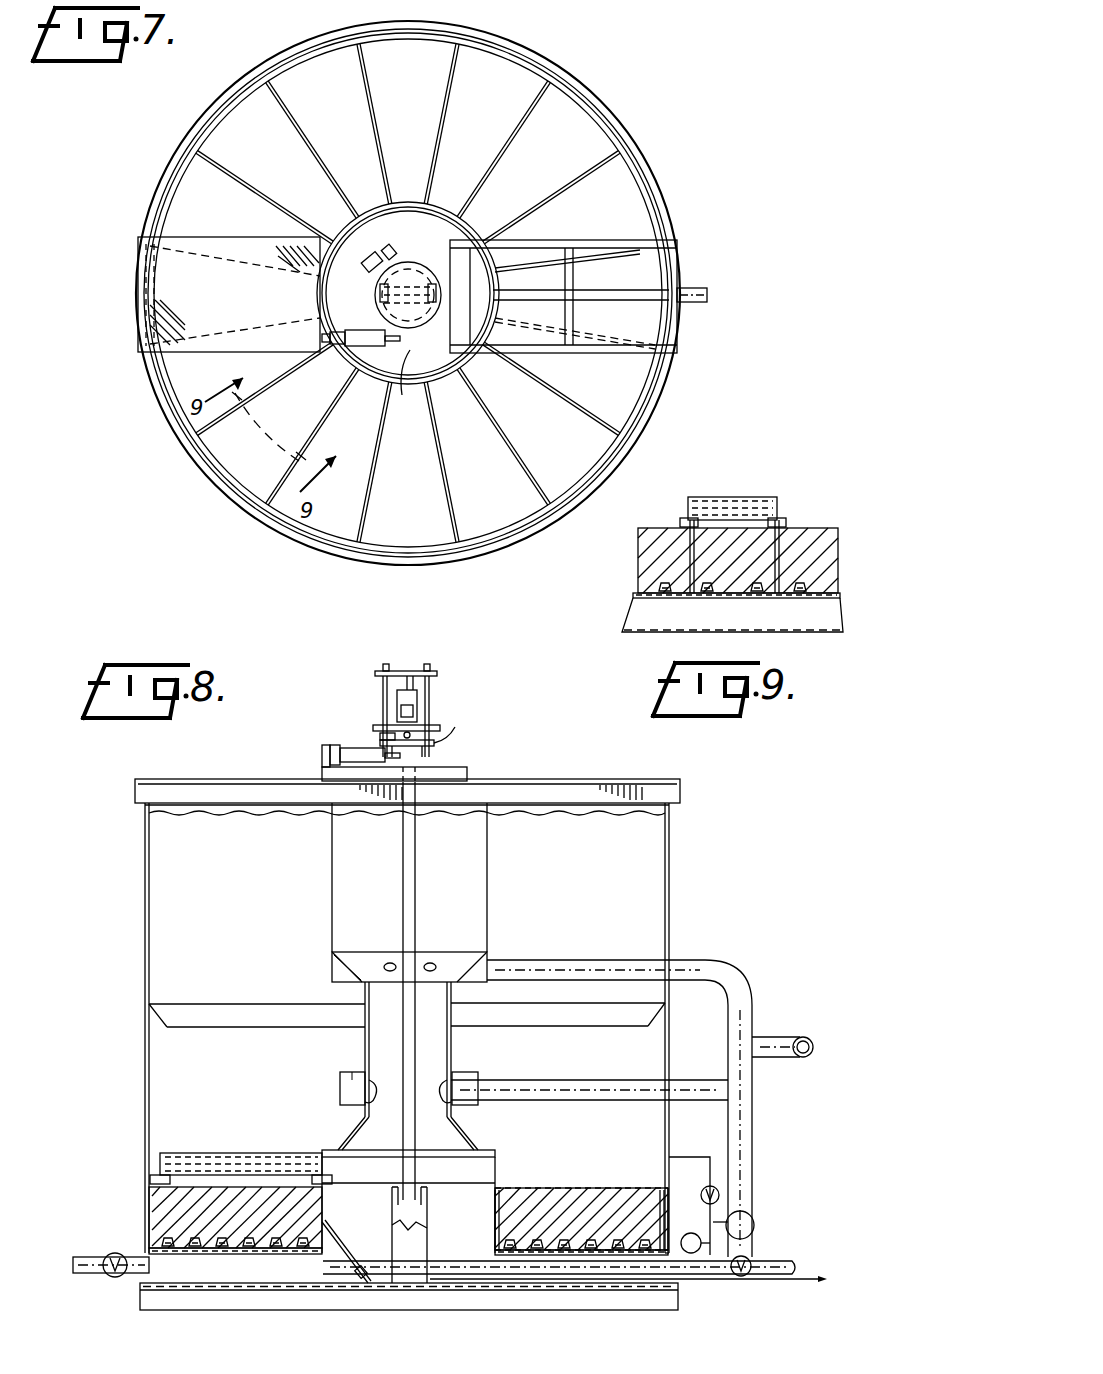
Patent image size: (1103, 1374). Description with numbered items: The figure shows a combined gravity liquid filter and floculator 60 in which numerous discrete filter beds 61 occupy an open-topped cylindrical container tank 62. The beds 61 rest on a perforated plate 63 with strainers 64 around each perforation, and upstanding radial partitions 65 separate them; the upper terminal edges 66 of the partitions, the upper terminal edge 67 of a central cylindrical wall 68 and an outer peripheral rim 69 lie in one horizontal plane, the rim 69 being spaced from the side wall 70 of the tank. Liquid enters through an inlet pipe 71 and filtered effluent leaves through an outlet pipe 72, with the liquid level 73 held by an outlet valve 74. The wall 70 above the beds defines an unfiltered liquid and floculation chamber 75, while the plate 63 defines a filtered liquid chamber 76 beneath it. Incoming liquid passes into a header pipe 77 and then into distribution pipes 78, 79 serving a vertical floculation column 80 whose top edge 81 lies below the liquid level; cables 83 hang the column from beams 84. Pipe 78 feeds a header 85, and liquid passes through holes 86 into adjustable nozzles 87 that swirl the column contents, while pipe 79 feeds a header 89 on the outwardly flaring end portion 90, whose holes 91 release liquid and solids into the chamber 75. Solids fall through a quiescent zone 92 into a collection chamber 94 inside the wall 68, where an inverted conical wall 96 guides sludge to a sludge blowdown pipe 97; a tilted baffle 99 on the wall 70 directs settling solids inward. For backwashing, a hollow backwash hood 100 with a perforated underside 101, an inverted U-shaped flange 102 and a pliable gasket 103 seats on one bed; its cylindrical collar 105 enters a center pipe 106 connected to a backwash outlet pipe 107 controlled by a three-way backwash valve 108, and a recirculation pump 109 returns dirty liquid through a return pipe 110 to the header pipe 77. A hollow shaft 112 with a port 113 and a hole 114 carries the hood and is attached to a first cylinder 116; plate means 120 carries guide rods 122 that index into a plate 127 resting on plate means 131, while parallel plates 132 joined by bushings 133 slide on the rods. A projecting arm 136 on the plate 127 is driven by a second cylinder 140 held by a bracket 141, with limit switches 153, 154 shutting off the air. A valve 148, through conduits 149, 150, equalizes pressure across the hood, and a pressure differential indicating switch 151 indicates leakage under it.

In FIG. 7, the combined gravity liquid filter and floculator 60 is at (660, 135).
In FIG. 8, the combined gravity liquid filter and floculator 60 is at (695, 918).
In FIG. 7, the filter beds 61 is at (398, 449).
In FIG. 9, the filter beds 61 is at (640, 562).
In FIG. 8, the filter beds 61 is at (150, 1213).
In FIG. 8, the container tank 62 is at (137, 925).
In FIG. 9, the perforated plate 63 is at (643, 603).
In FIG. 8, the perforated plate 63 is at (250, 1258).
In FIG. 9, the strainers 64 is at (815, 590).
In FIG. 8, the strainers 64 is at (266, 1250).
In FIG. 9, the radial partitions 65 is at (680, 548).
In FIG. 8, the radial partitions 65 is at (558, 1190).
In FIG. 7, the upper terminal edges 66 is at (408, 293).
In FIG. 8, the upper terminal edges 66 is at (598, 1190).
In FIG. 7, the upper terminal edge 67 is at (409, 202).
In FIG. 8, the upper terminal edge 67 is at (512, 1190).
In FIG. 7, the cylindrical wall 68 is at (445, 212).
In FIG. 8, the cylindrical wall 68 is at (495, 1190).
In FIG. 7, the outer peripheral rim 69 is at (535, 73).
In FIG. 8, the outer peripheral rim 69 is at (662, 1190).
In FIG. 7, the side wall 70 is at (605, 112).
In FIG. 8, the side wall 70 is at (672, 1055).
In FIG. 8, the inlet pipe 71 is at (775, 1037).
In FIG. 8, the outlet pipe 72 is at (80, 1277).
In FIG. 8, the liquid level 73 is at (650, 817).
In FIG. 8, the outlet valve 74 is at (112, 1278).
In FIG. 8, the unfiltered liquid and floculation chamber 75 is at (407, 941).
In FIG. 9, the filtered liquid chamber 76 is at (840, 621).
In FIG. 8, the filtered liquid chamber 76 is at (200, 1294).
In FIG. 8, the header pipe 77 is at (752, 1105).
In FIG. 8, the distribution pipe 78 is at (634, 1080).
In FIG. 8, the distribution pipe 79 is at (618, 960).
In FIG. 8, the floculation column 80 is at (452, 1062).
In FIG. 8, the top edge 81 is at (480, 950).
In FIG. 8, the cables 83 is at (330, 866).
In FIG. 7, the beams 84 is at (560, 240).
In FIG. 8, the beams 84 is at (610, 781).
In FIG. 8, the header 85 is at (352, 1072).
In FIG. 8, the holes 86 is at (340, 1084).
In FIG. 8, the adjustable nozzles 87 is at (372, 1082).
In FIG. 8, the header 89 is at (330, 966).
In FIG. 8, the outwardly flaring end portion 90 is at (340, 952).
In FIG. 8, the holes 91 is at (390, 962).
In FIG. 8, the quiescent zone 92 is at (472, 1150).
In FIG. 8, the collection chamber 94 is at (408, 1205).
In FIG. 8, the inverted conical wall 96 is at (362, 1284).
In FIG. 8, the sludge blowdown pipe 97 is at (782, 1284).
In FIG. 8, the tilted baffle 99 is at (166, 1024).
In FIG. 7, the backwash hood 100 is at (320, 420).
In FIG. 9, the backwash hood 100 is at (733, 478).
In FIG. 8, the backwash hood 100 is at (305, 1153).
In FIG. 9, the underside 101 is at (738, 510).
In FIG. 8, the underside 101 is at (238, 1160).
In FIG. 9, the inverted U-shaped flange 102 is at (684, 518).
In FIG. 8, the inverted U-shaped flange 102 is at (158, 1178).
In FIG. 9, the pliable gasket 103 is at (790, 518).
In FIG. 8, the cylindrical collar 105 is at (425, 1172).
In FIG. 8, the center pipe 106 is at (412, 1292).
In FIG. 8, the backwash outlet pipe 107 is at (700, 1276).
In FIG. 8, the three-way backwash valve 108 is at (752, 1260).
In FIG. 8, the recirculation pump 109 is at (755, 1225).
In FIG. 8, the return pipe 110 is at (752, 1143).
In FIG. 8, the shaft 112 is at (416, 854).
In FIG. 8, the port 113 is at (400, 1165).
In FIG. 8, the hole 114 is at (404, 732).
In FIG. 8, the first cylinder 116 is at (417, 708).
In FIG. 7, the plate means 120 is at (377, 291).
In FIG. 8, the plate means 120 is at (420, 671).
In FIG. 8, the guide rods 122 is at (383, 673).
In FIG. 8, the plate 127 is at (437, 756).
In FIG. 8, the plate means 131 is at (467, 772).
In FIG. 8, the plates 132 is at (440, 728).
In FIG. 8, the bushings 133 is at (382, 733).
In FIG. 7, the projecting arm 136 is at (402, 398).
In FIG. 7, the second cylinder 140 is at (350, 346).
In FIG. 8, the second cylinder 140 is at (350, 748).
In FIG. 8, the bracket 141 is at (322, 760).
In FIG. 8, the valve 148 is at (702, 1195).
In FIG. 8, the conduit 149 is at (713, 1222).
In FIG. 8, the conduit 150 is at (682, 1157).
In FIG. 8, the pressure differential indicating switch 151 is at (700, 1222).
In FIG. 7, the limit switch 153 is at (387, 244).
In FIG. 7, the limit switch 154 is at (368, 257).